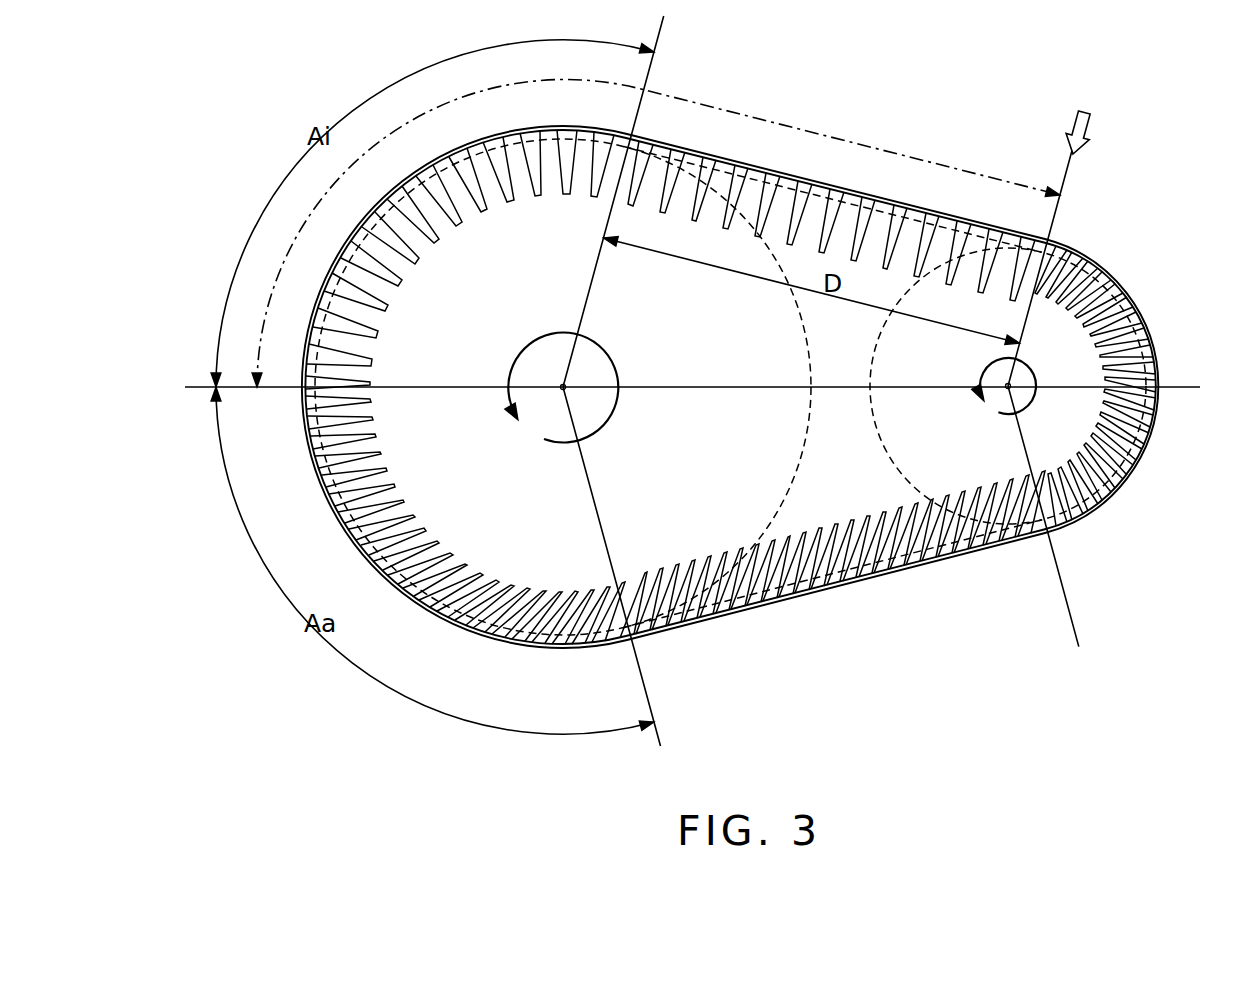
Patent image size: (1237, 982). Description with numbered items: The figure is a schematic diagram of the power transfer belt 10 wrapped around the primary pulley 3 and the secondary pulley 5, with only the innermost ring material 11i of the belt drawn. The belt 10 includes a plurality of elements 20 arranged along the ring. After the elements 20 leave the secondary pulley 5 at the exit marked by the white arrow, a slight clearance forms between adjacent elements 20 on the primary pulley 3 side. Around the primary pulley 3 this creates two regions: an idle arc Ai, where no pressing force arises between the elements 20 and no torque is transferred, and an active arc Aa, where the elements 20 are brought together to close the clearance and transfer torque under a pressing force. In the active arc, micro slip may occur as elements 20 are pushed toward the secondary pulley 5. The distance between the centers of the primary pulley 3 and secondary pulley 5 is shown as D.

The primary pulley 3 is at (803, 315).
The secondary pulley 5 is at (873, 433).
The power transfer belt 10 is at (1140, 501).
The innermost ring material 11i is at (1147, 333).
The elements 20 is at (797, 578).